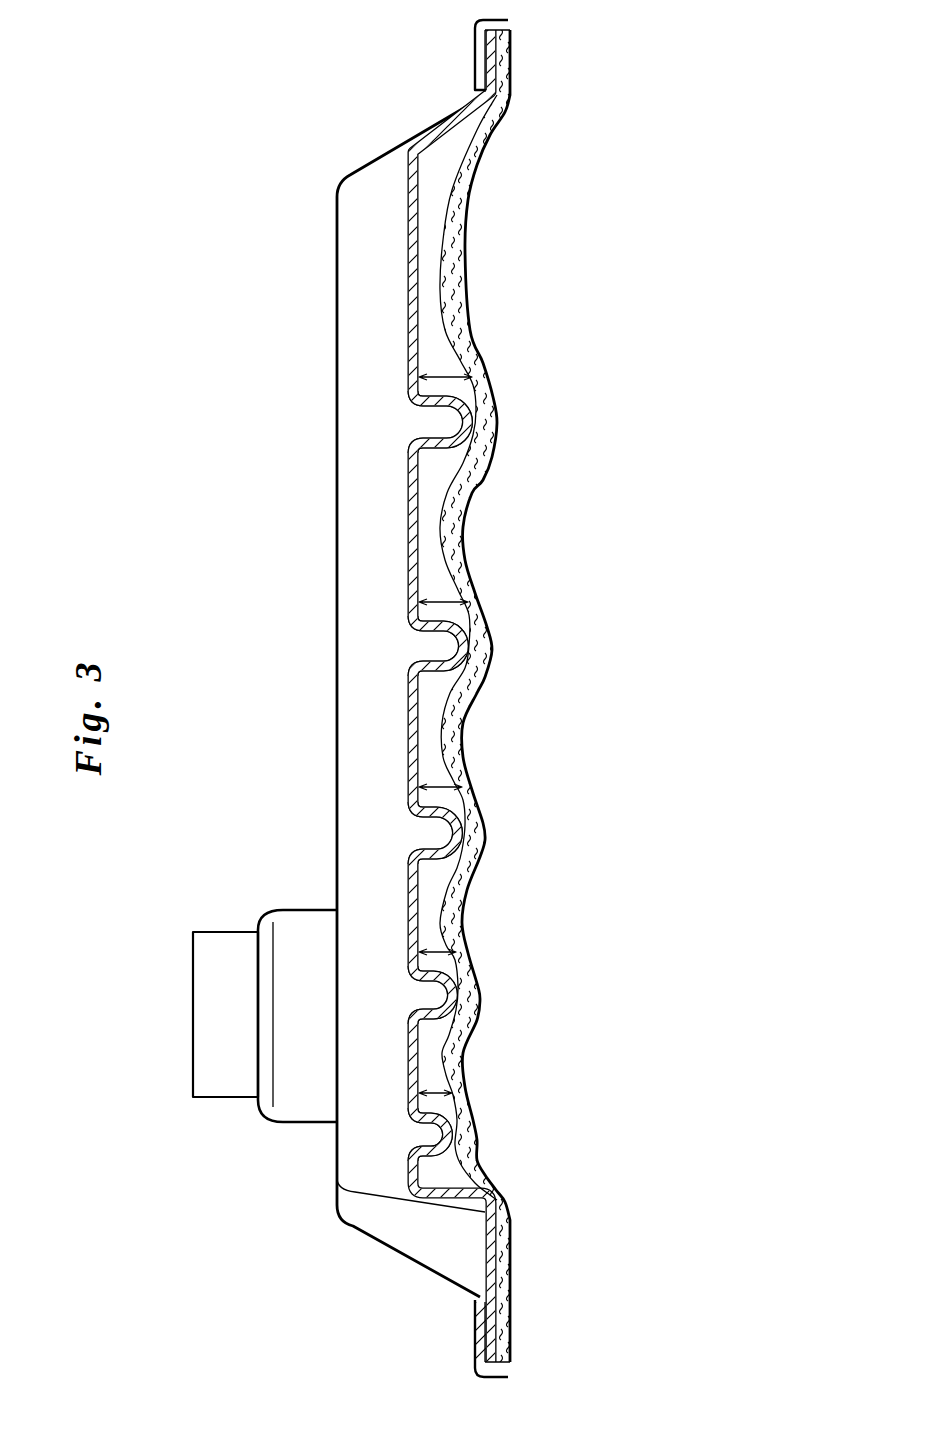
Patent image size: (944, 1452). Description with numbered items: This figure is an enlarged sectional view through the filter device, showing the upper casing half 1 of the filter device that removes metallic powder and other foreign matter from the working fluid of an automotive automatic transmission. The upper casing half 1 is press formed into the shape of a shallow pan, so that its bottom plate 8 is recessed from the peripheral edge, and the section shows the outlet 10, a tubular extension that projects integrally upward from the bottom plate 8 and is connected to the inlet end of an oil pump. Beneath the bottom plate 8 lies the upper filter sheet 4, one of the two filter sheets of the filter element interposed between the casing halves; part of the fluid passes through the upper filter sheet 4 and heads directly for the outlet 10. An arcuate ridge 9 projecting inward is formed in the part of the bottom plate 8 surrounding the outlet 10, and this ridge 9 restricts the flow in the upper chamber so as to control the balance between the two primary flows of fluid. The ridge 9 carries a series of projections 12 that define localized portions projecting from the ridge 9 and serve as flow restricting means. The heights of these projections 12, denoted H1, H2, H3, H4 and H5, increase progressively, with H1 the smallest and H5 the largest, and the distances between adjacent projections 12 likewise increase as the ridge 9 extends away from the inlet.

The upper casing half 1 is at (328, 288).
The upper filter sheet 4 is at (470, 215).
The bottom plate 8 is at (337, 485).
The arcuate ridge 9 is at (407, 208).
The outlet 10 is at (233, 930).
The projections 12 is at (493, 650).
The height of first projection H1 is at (447, 1091).
The height of second projection H2 is at (447, 950).
The height of third projection H3 is at (447, 785).
The height of fourth projection H4 is at (447, 600).
The height of fifth projection H5 is at (447, 375).